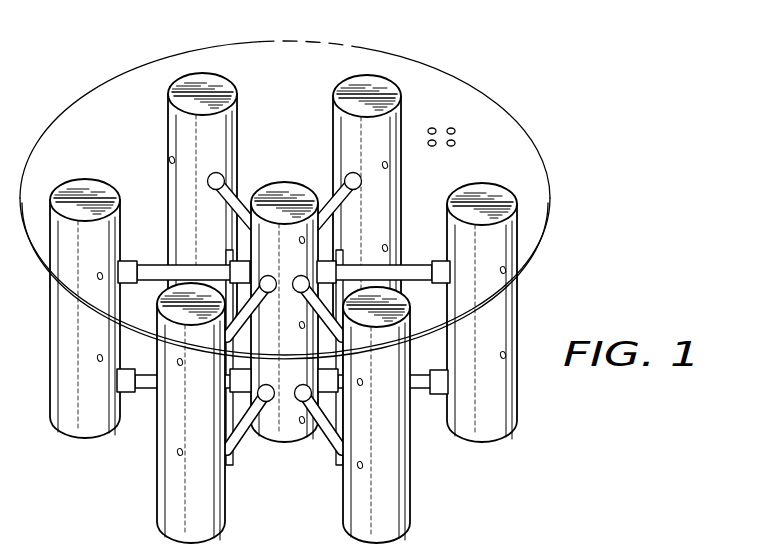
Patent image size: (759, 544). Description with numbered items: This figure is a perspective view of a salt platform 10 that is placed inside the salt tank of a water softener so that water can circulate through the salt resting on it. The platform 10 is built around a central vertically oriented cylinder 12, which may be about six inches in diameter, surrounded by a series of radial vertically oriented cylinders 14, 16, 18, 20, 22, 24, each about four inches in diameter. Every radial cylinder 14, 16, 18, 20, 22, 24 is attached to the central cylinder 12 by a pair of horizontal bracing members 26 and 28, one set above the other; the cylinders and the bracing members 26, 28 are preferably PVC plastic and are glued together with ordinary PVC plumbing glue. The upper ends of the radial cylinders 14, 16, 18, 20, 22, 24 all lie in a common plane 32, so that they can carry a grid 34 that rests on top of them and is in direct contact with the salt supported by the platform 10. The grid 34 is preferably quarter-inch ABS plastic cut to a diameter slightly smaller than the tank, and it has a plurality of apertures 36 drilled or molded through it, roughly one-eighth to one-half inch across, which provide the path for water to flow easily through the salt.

The salt platform 10 is at (340, 280).
The central vertically oriented cylinder 12 is at (285, 184).
The radial vertically oriented cylinder 14 is at (95, 182).
The radial vertically oriented cylinder 16 is at (170, 90).
The radial vertically oriented cylinder 18 is at (333, 98).
The radial vertically oriented cylinder 20 is at (482, 186).
The radial vertically oriented cylinder 22 is at (411, 498).
The radial vertically oriented cylinder 24 is at (156, 497).
The horizontal bracing member 26 is at (152, 264).
The horizontal bracing member 28 is at (147, 393).
The common plane 32 is at (298, 188).
The grid 34 is at (418, 68).
The apertures 36 is at (433, 128).